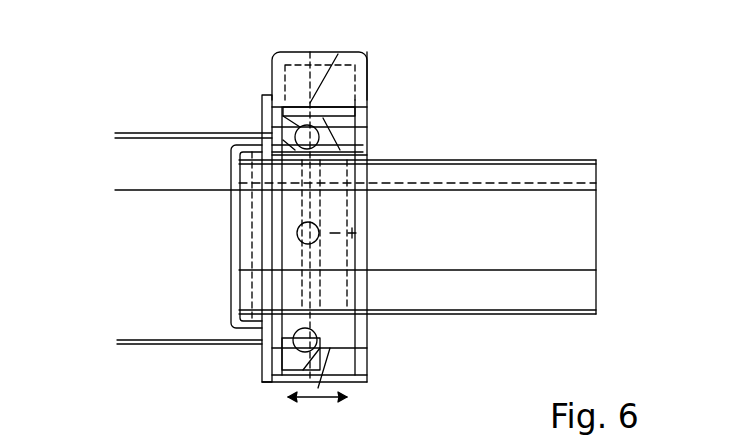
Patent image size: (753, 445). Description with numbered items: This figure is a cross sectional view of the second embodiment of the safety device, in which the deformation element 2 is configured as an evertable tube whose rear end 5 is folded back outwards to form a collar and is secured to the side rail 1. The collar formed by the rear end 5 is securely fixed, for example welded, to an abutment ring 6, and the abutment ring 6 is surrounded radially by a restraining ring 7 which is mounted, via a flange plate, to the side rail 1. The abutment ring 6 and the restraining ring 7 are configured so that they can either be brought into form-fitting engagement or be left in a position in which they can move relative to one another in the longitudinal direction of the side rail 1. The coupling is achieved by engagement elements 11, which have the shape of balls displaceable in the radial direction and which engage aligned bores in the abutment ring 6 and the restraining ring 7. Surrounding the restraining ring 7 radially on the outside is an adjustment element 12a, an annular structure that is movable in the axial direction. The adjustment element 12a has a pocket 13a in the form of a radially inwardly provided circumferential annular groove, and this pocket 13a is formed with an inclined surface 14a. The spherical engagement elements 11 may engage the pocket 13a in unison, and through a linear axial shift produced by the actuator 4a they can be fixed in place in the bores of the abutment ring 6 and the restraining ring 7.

The side rail 1 is at (120, 345).
The deformation element 2 is at (572, 165).
The actuator 4a is at (347, 60).
The rear end 5 is at (240, 317).
The abutment ring 6 is at (352, 145).
The restraining ring 7 is at (263, 130).
The engagement elements 11 is at (302, 345).
The adjustment element 12a is at (347, 117).
The pocket 13a is at (267, 132).
The inclined surface 14a is at (337, 102).